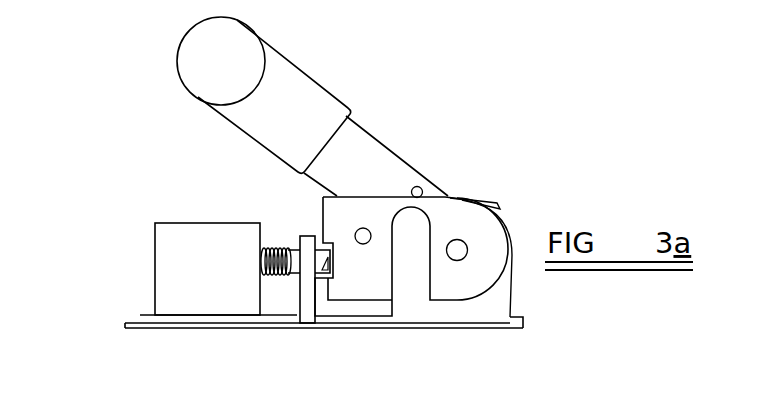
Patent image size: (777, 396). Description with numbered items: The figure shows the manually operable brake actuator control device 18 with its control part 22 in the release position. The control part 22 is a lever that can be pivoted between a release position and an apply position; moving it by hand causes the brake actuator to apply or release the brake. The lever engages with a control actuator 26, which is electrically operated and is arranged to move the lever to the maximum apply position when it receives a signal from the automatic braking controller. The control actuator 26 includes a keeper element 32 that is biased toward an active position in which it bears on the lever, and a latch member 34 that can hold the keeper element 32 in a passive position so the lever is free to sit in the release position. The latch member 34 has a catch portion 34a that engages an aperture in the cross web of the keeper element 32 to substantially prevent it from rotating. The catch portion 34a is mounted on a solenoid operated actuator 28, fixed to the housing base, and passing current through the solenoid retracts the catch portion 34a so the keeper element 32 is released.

The brake actuator control device 18 is at (531, 61).
The control part 22 is at (316, 62).
The control actuator 26 is at (235, 166).
The solenoid operated actuator 28 is at (182, 277).
The keeper element 32 is at (445, 218).
The latch member 34 is at (178, 210).
The catch portion 34a is at (324, 266).